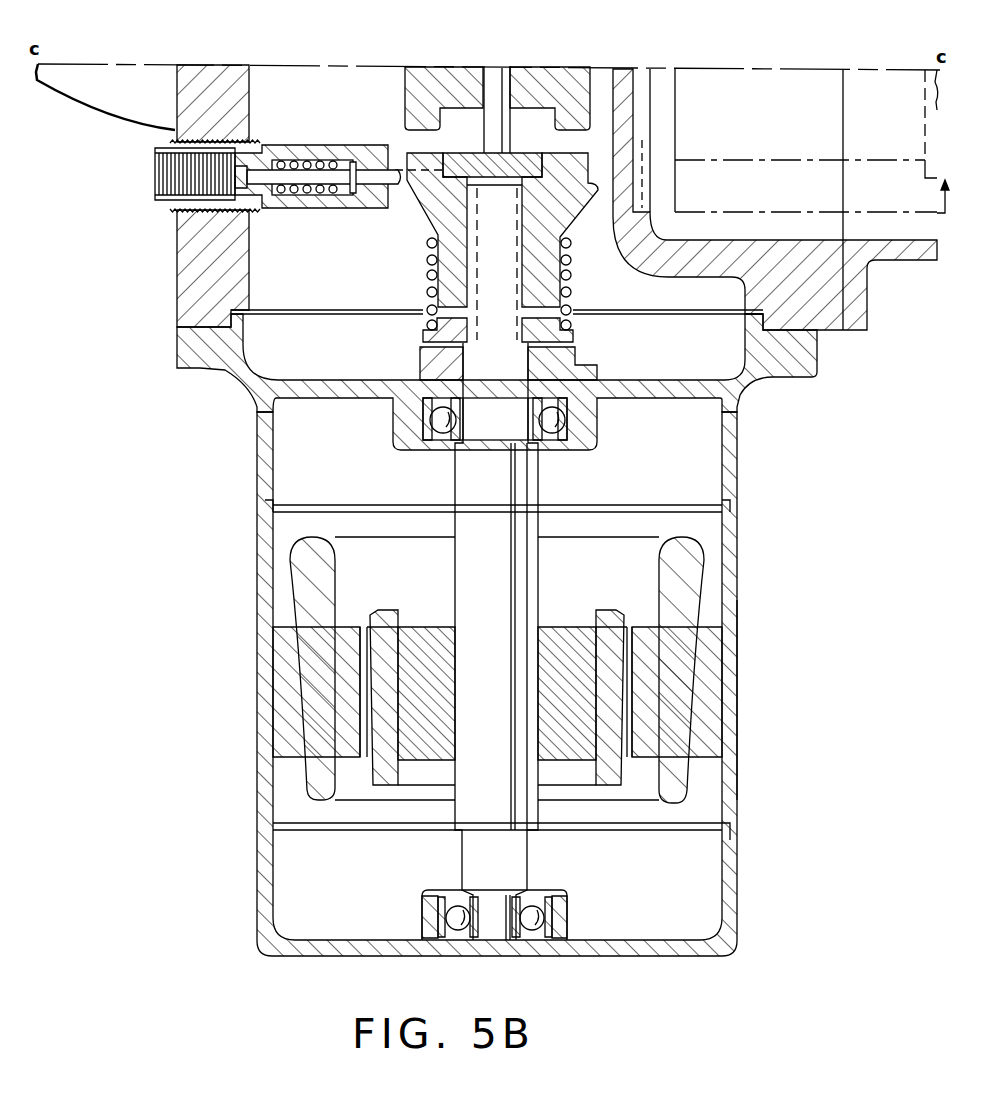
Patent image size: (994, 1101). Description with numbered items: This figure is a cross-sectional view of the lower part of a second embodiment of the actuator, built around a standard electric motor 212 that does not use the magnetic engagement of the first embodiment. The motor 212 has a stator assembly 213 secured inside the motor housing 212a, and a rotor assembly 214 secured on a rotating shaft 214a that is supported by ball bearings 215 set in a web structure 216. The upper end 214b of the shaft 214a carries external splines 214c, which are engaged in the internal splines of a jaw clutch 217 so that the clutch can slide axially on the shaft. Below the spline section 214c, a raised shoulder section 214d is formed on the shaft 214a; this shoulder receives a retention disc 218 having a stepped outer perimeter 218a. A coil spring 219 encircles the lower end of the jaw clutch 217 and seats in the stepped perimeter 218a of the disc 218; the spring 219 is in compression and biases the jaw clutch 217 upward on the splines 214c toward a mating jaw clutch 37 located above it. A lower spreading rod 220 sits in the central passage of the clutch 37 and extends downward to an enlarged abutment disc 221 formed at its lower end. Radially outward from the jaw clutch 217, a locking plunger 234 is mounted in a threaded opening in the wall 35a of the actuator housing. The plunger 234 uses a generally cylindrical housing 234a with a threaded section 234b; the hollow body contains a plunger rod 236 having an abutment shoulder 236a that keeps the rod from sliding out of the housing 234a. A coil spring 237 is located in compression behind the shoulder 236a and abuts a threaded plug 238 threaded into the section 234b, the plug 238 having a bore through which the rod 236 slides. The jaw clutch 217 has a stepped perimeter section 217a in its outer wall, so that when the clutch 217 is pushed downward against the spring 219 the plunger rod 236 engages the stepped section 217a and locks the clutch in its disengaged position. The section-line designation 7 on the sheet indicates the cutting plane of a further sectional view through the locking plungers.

The wall of the actuator housing 35a is at (190, 260).
The section line 7 is at (943, 182).
The mating jaw clutch 37 is at (557, 93).
The lower spreading rod 220 is at (493, 77).
The enlarged abutment disc 221 is at (465, 155).
The jaw clutch 217 is at (432, 208).
The stepped perimeter section 217a is at (598, 183).
The coil spring 219 is at (595, 240).
The retention disc 218 is at (426, 292).
The stepped outer perimeter 218a is at (568, 328).
The upper end of shaft 214b is at (502, 272).
The external splines 214c is at (572, 294).
The raised shoulder section 214d is at (425, 352).
The web structure 216 is at (605, 383).
The ball bearings 215 is at (570, 423).
The rotating shaft 214a is at (507, 488).
The rotor assembly 214 is at (607, 612).
The stator assembly 213 is at (693, 560).
The electric motor 212 is at (257, 595).
The motor housing 212a is at (740, 748).
The threaded section 234b is at (212, 138).
The threaded plug 238 is at (257, 140).
The cylindrical housing 234a is at (353, 145).
The locking plunger 234 is at (303, 150).
The coil spring 237 is at (292, 203).
The plunger rod 236 is at (322, 186).
The abutment shoulder 236a is at (354, 195).